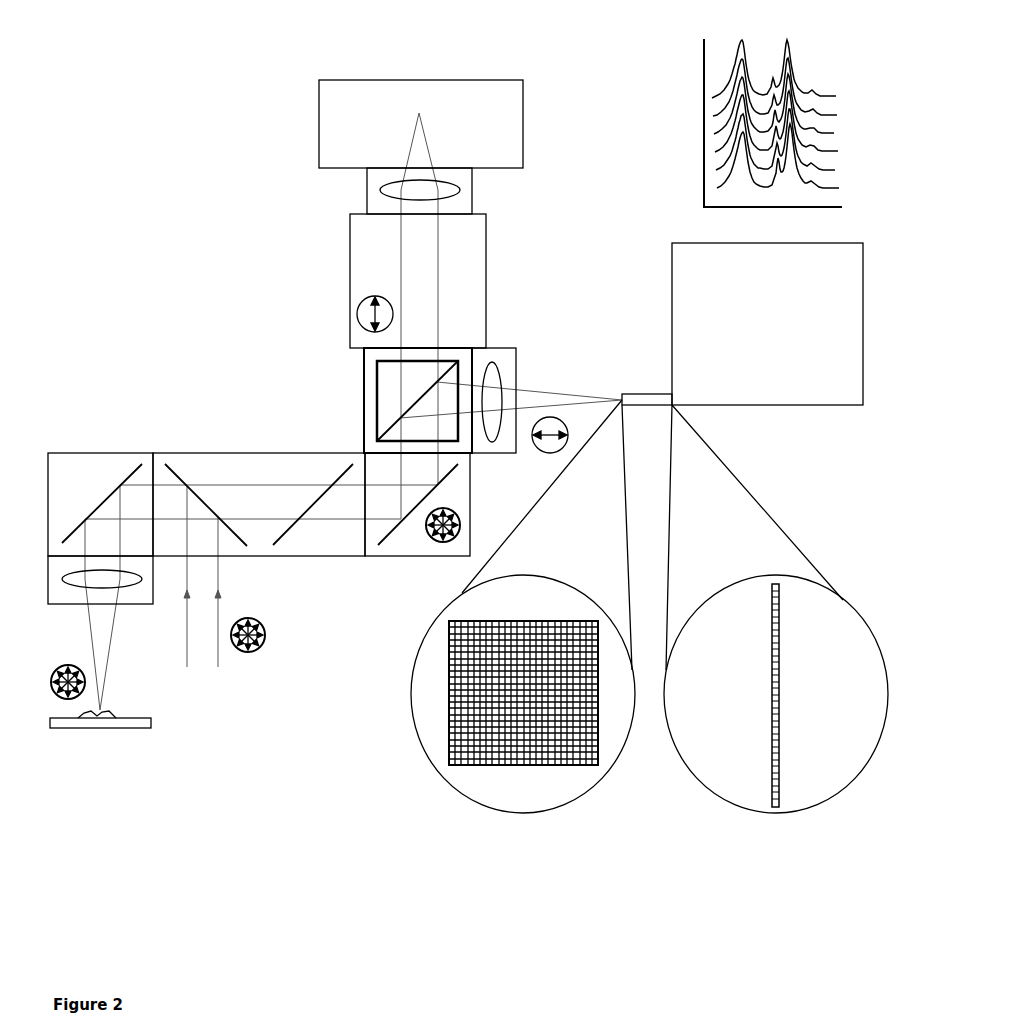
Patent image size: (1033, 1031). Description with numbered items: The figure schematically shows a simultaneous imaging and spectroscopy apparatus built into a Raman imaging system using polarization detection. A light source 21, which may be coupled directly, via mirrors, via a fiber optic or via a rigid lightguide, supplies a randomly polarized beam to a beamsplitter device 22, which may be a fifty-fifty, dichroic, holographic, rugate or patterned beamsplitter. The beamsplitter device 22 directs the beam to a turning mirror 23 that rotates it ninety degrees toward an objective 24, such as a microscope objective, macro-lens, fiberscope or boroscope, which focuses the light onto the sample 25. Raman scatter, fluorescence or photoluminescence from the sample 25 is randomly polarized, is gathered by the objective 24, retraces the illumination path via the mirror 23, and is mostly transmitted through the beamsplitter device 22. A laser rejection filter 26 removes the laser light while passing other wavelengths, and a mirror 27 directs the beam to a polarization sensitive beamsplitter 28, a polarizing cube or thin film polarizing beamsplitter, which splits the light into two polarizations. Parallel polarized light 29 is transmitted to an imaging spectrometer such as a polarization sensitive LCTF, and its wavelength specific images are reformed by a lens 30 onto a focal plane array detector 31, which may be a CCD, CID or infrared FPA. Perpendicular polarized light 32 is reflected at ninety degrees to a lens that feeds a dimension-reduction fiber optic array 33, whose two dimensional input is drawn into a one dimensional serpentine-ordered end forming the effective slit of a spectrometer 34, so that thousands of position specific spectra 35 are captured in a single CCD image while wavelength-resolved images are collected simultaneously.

The light source 21 is at (248, 650).
The beamsplitter device 22 is at (259, 504).
The turning mirror 23 is at (100, 504).
The objective 24 is at (84, 580).
The sample 25 is at (86, 700).
The laser rejection filter 26 is at (313, 504).
The mirror 27 is at (417, 504).
The polarization sensitive beamsplitter 28 is at (402, 400).
The parallel polarized light 29 is at (397, 281).
The lens 30 is at (399, 191).
The focal plane array detector 31 is at (440, 124).
The perpendicular polarized light 32 is at (520, 417).
The dimension-reduction fiber optic array 33 is at (649, 588).
The spectrometer 34 is at (767, 324).
The position specific spectra 35 is at (751, 123).